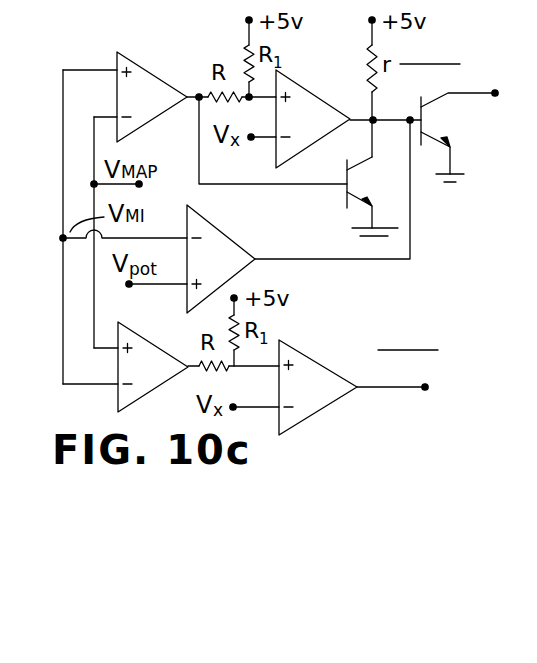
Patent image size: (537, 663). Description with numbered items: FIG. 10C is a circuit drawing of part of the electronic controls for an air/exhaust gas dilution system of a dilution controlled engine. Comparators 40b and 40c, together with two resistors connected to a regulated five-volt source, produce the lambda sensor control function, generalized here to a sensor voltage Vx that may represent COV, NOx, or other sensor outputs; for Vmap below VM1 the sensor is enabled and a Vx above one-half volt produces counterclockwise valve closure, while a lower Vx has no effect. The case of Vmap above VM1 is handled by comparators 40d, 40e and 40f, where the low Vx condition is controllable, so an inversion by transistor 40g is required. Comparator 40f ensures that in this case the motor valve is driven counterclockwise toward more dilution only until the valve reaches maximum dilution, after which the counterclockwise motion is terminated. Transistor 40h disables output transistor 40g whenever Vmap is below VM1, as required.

The comparator 40b is at (334, 387).
The comparator 40c is at (131, 367).
The comparator 40d is at (334, 119).
The comparator 40e is at (135, 97).
The comparator 40f is at (221, 259).
The transistor 40g is at (449, 123).
The transistor 40h is at (339, 196).